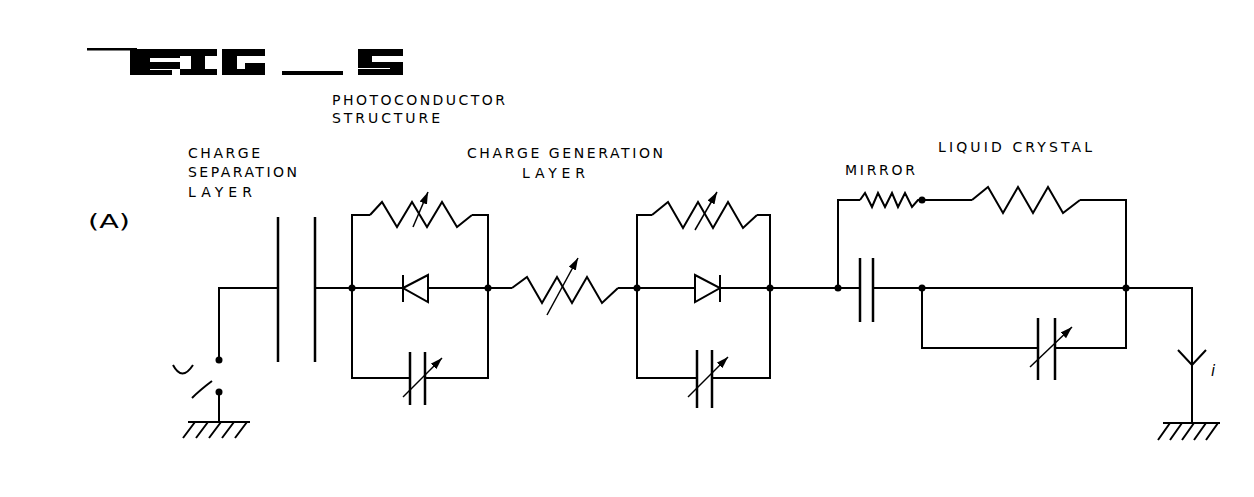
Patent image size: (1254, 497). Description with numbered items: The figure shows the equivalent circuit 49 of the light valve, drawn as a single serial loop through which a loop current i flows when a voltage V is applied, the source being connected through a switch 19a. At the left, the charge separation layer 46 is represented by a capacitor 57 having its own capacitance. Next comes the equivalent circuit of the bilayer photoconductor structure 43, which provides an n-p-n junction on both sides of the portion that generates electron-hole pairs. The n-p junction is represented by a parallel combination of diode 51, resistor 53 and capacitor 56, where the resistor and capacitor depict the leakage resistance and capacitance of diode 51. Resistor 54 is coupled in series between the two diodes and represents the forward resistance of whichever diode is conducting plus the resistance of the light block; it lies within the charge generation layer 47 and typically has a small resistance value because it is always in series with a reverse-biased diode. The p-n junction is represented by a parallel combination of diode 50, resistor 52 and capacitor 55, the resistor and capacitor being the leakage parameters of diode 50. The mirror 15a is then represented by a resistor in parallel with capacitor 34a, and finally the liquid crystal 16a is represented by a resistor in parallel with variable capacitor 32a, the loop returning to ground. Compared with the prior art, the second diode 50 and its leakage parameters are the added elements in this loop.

The equivalent circuit 49 is at (610, 103).
The photoconductor structure 43 is at (380, 168).
The resistor 53 is at (397, 205).
The diode 51 is at (415, 305).
The capacitor 56 is at (428, 397).
The charge separation layer 46 is at (300, 220).
The capacitor 57 is at (316, 352).
The charge generation layer 47 is at (550, 222).
The resistor 54 is at (553, 275).
The resistor 52 is at (698, 195).
The diode 50 is at (702, 302).
The capacitor 55 is at (692, 403).
The switch 19a is at (192, 398).
The mirror 15a is at (838, 208).
The capacitor 34a is at (857, 320).
The liquid crystal 16a is at (1095, 200).
The variable capacitor 32a is at (1047, 383).